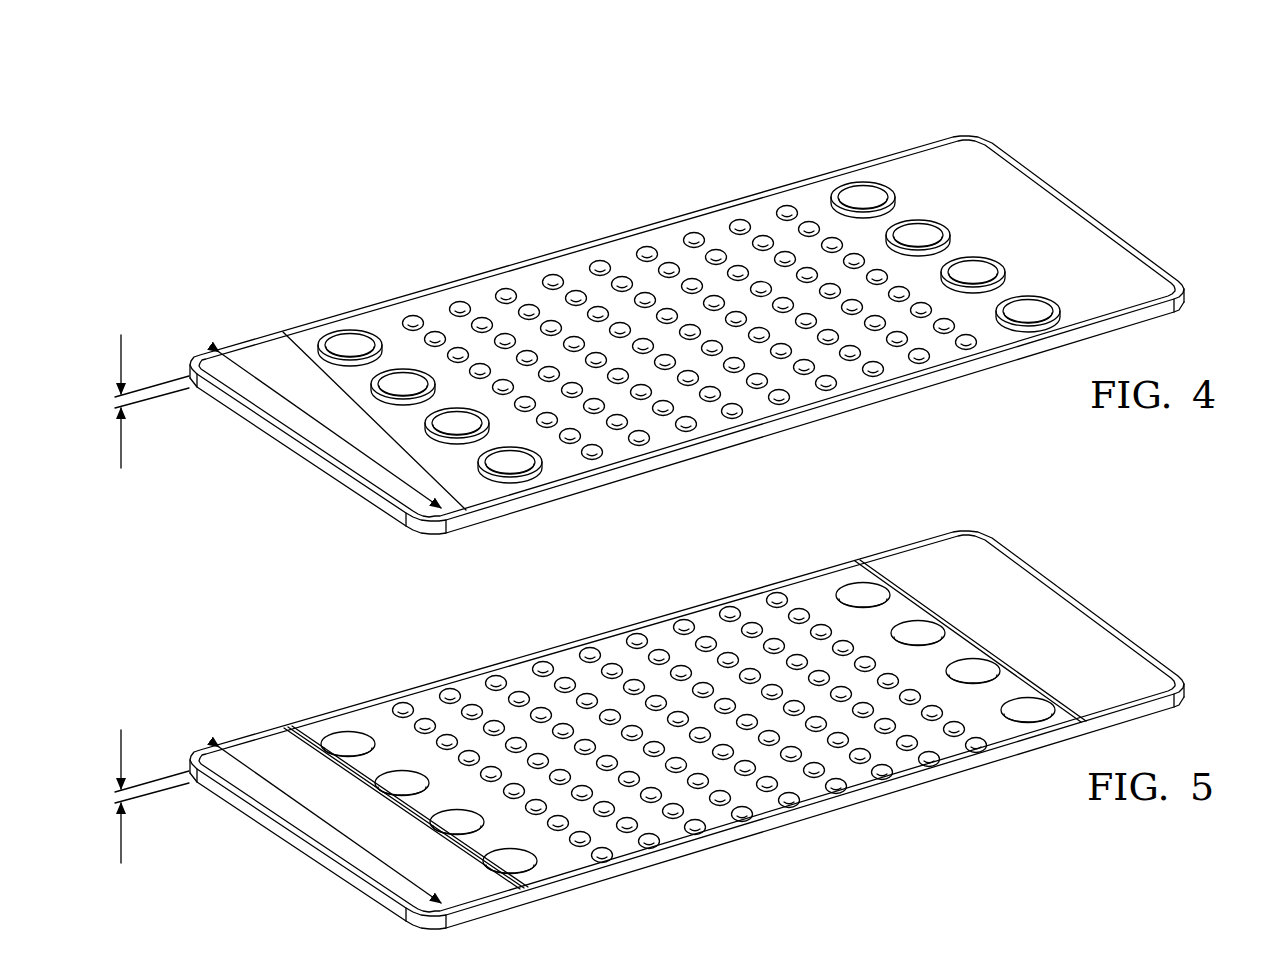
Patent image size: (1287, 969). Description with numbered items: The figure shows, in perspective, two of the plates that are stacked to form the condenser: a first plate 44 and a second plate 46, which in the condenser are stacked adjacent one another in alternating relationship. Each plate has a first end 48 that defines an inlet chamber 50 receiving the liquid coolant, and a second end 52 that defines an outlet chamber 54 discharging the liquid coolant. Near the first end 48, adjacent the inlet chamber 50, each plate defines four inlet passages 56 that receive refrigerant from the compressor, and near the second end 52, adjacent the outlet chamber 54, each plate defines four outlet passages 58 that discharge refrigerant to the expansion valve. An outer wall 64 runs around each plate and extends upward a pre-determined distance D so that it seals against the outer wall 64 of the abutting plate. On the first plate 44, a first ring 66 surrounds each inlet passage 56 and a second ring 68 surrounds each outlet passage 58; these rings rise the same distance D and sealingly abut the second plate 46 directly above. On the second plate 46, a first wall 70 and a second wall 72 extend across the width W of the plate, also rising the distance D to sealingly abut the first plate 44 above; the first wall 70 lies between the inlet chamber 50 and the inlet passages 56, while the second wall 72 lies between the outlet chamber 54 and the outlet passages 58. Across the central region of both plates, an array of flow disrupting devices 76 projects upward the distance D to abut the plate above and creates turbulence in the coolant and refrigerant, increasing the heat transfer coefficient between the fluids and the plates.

In FIG. 4, the first plate 44 is at (1174, 147).
In FIG. 5, the second plate 46 is at (1206, 501).
In FIG. 4, the first end 48 is at (699, 319).
In FIG. 5, the first end 48 is at (699, 699).
In FIG. 4, the inlet chamber 50 is at (1066, 198).
In FIG. 5, the inlet chamber 50 is at (1034, 517).
In FIG. 4, the second end 52 is at (228, 408).
In FIG. 5, the second end 52 is at (687, 806).
In FIG. 4, the outlet chamber 54 is at (279, 414).
In FIG. 5, the outlet chamber 54 is at (261, 857).
In FIG. 4, the inlet passage 56 is at (912, 232).
In FIG. 5, the inlet passage 56 is at (937, 593).
In FIG. 4, the outlet passage 58 is at (393, 373).
In FIG. 5, the outlet passage 58 is at (421, 744).
In FIG. 4, the outer wall 64 is at (514, 258).
In FIG. 5, the outer wall 64 is at (687, 719).
In FIG. 4, the first ring 66 is at (862, 210).
In FIG. 4, the second ring 68 is at (350, 363).
In FIG. 4, the first wall 70 is at (1067, 312).
In FIG. 5, the first wall 70 is at (1031, 641).
In FIG. 4, the second wall 72 is at (297, 343).
In FIG. 5, the second wall 72 is at (385, 769).
In FIG. 4, the flow disrupting device 76 is at (596, 406).
In FIG. 5, the flow disrupting device 76 is at (690, 711).
In FIG. 4, the pre-determined distance D is at (116, 406).
In FIG. 5, the pre-determined distance D is at (133, 806).
In FIG. 4, the width W is at (343, 440).
In FIG. 5, the width W is at (330, 842).